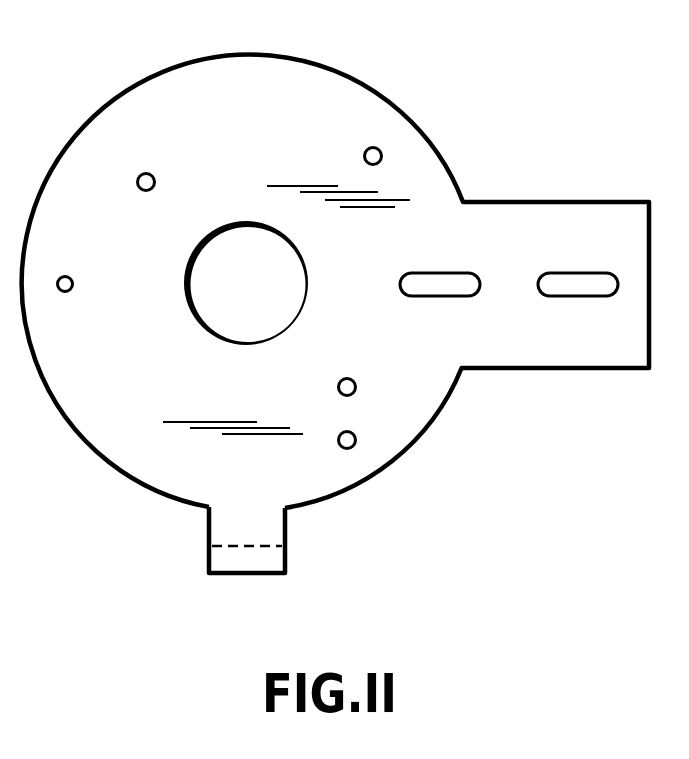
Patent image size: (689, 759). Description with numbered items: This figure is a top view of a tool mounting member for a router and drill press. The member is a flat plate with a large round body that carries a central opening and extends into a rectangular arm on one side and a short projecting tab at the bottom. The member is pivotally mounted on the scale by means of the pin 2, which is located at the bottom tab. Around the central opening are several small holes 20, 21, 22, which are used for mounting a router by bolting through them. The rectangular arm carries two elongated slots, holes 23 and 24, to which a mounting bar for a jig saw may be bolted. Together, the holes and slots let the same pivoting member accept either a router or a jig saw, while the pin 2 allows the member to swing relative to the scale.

The hole 20 is at (423, 432).
The pin 2 is at (265, 537).
The hole 21 is at (73, 286).
The hole 22 is at (155, 180).
The hole 23 is at (436, 297).
The hole 24 is at (560, 297).